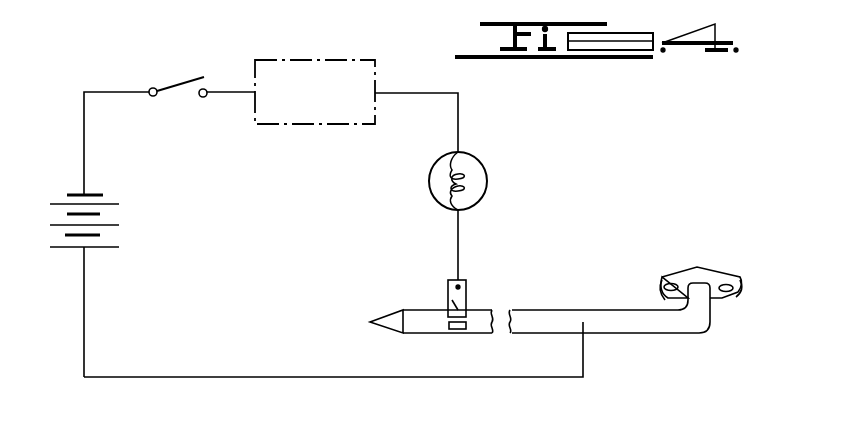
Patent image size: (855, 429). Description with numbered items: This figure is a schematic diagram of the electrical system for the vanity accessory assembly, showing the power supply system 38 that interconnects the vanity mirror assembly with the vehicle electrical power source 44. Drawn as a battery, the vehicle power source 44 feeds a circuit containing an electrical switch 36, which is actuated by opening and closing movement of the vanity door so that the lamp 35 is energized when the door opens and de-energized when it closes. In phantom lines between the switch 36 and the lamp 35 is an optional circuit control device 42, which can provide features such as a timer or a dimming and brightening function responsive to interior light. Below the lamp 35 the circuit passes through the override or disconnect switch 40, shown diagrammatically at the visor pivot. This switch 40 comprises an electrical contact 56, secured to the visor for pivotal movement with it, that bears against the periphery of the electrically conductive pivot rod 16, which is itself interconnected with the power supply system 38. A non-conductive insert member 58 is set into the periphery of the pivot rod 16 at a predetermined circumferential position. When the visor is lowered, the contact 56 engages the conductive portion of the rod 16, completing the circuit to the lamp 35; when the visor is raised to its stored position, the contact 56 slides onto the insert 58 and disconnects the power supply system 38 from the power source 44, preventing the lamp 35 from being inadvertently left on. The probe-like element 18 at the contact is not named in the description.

The pivot rod 16 is at (630, 334).
The probe tip 18 is at (418, 320).
The lamp 35 is at (478, 166).
The electrical switch 36 is at (181, 86).
The power supply system 38 is at (395, 381).
The disconnect switch 40 is at (472, 298).
The circuit control device 42 is at (330, 101).
The vehicle electrical power source 44 is at (110, 236).
The electrical contact 56 is at (455, 303).
The non-conductive insert member 58 is at (460, 328).